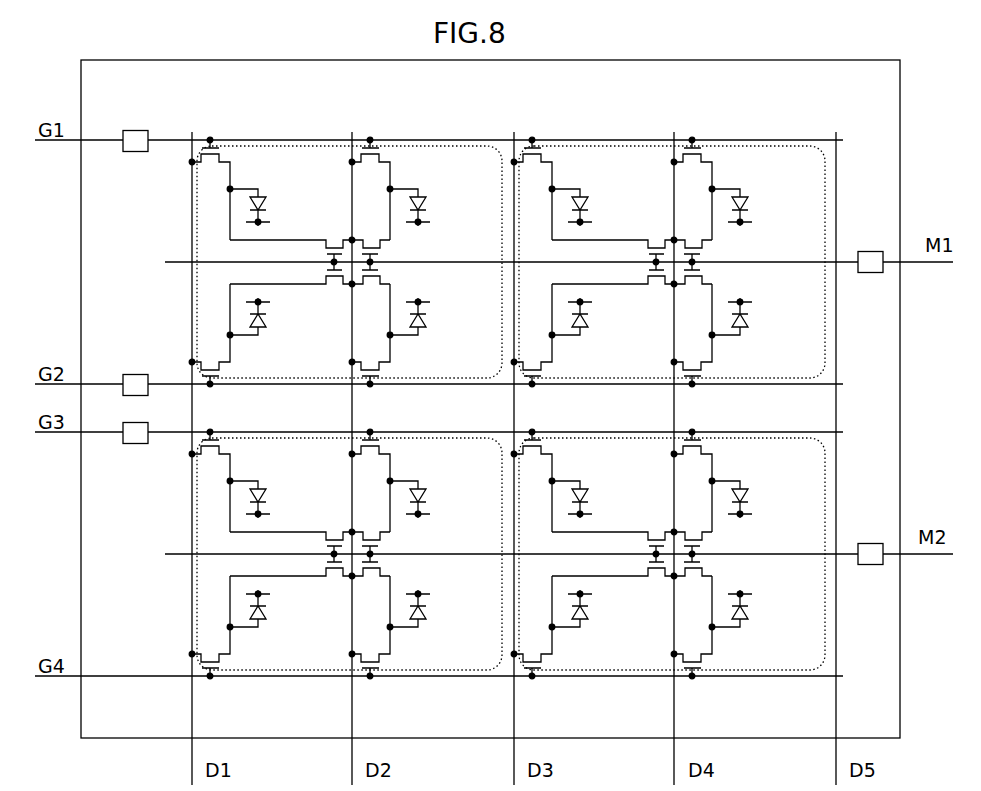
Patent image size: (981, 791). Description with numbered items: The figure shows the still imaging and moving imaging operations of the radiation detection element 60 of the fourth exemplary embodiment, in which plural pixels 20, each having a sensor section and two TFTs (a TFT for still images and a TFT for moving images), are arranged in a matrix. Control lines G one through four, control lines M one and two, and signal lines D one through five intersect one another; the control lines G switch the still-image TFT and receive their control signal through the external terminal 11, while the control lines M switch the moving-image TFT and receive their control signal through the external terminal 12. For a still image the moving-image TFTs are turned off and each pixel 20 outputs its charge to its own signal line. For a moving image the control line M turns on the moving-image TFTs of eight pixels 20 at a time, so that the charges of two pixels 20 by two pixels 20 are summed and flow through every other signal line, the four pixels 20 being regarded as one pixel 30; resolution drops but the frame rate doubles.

The radiation detection element 60 is at (793, 60).
The external terminal 11 is at (138, 130).
The external terminal 12 is at (870, 251).
The pixel 20 is at (506, 409).
The one pixel 30 is at (524, 409).